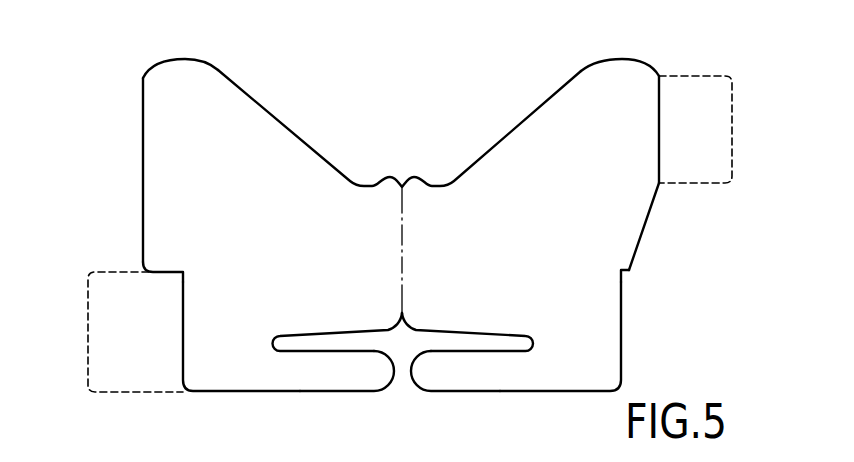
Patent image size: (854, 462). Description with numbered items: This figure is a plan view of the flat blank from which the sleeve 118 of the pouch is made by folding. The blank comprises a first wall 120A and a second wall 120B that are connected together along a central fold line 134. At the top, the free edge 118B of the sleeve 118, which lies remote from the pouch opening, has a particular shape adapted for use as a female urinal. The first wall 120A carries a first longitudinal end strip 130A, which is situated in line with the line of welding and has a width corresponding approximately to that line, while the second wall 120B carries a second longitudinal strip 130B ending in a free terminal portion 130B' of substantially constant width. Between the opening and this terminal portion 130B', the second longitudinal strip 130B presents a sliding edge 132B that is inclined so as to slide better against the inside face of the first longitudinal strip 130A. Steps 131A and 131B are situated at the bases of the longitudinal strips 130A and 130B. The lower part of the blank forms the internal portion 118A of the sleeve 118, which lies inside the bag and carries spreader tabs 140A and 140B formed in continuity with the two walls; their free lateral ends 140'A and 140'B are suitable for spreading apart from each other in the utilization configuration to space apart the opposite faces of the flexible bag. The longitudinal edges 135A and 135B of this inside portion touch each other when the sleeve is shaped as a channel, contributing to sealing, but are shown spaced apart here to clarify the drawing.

The sleeve 118 is at (97, 96).
The internal portion of the sleeve 118A is at (88, 272).
The free edge of the sleeve 118B is at (502, 145).
The first wall 120A is at (277, 223).
The second wall 120B is at (566, 223).
The first longitudinal end strip 130A is at (178, 75).
The second longitudinal strip 130B is at (620, 46).
The free terminal portion 130B' is at (730, 129).
The step 131A is at (172, 273).
The step 131B is at (623, 272).
The sliding edge 132B is at (649, 226).
The fold line 134 is at (403, 236).
The longitudinal edge of the inside portion of the sleeve 135A is at (183, 346).
The longitudinal edge of the inside portion of the sleeve 135B is at (622, 346).
The spreader tab 140A is at (348, 375).
The spreader tab 140B is at (462, 372).
The free lateral end 140'A is at (350, 394).
The free lateral end 140'B is at (455, 394).